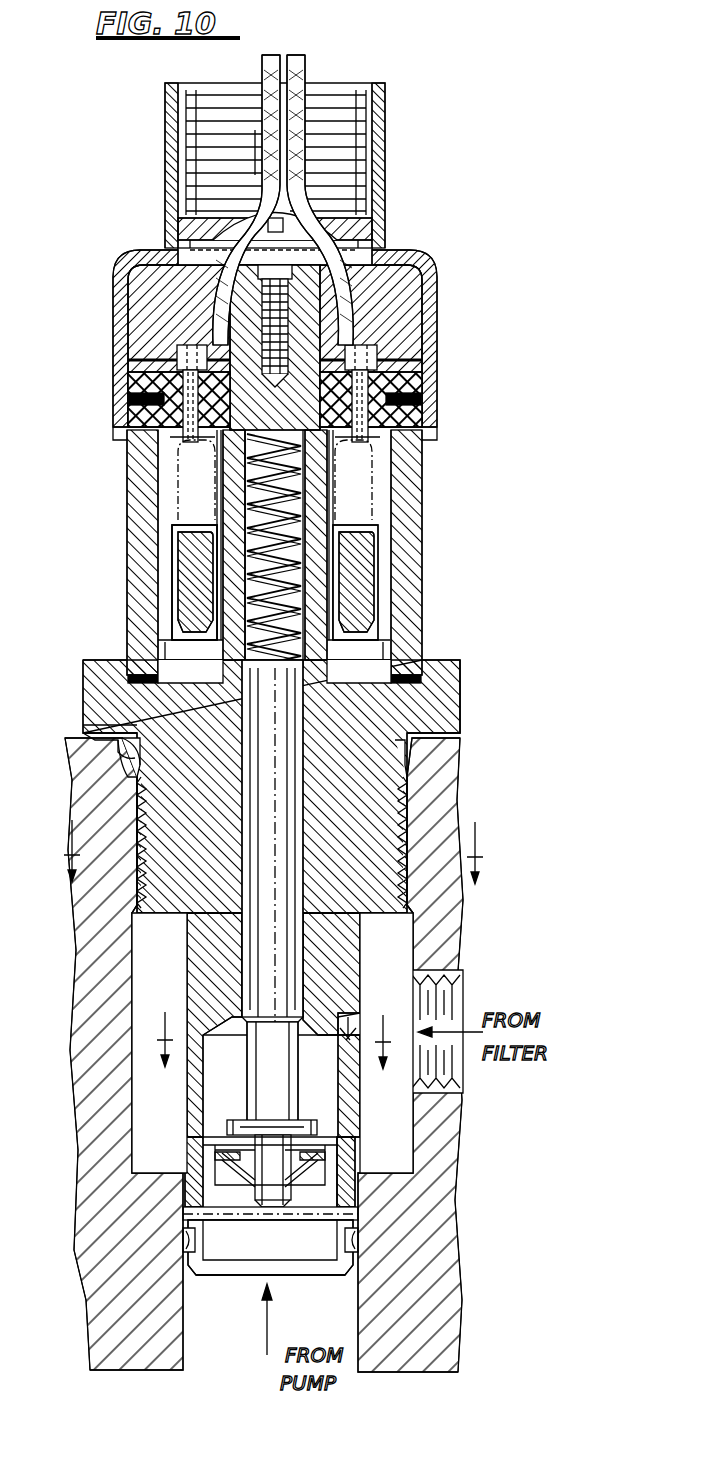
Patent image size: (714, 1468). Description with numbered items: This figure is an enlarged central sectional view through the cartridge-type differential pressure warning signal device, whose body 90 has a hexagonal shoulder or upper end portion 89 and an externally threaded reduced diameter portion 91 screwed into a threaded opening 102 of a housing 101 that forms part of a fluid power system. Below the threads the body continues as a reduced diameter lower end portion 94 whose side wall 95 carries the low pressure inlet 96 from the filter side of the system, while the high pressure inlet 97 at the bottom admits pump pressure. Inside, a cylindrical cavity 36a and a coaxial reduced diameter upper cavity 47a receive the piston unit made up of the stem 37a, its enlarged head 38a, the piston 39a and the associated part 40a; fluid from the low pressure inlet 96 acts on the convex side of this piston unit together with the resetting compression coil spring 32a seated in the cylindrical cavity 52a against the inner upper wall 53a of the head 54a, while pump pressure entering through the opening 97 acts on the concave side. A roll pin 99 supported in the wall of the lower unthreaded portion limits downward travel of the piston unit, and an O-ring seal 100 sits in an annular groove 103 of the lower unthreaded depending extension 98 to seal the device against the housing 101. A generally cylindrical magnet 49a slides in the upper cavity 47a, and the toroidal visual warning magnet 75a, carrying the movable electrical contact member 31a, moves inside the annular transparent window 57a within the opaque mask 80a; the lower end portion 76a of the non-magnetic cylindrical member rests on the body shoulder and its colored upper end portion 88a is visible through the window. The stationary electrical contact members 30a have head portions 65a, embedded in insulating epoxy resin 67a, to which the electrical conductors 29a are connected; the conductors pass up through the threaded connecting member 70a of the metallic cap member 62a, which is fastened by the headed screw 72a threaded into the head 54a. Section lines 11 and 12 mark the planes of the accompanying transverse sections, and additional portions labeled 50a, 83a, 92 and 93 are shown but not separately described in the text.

The electrical conductors 29a is at (298, 62).
The annular threaded connecting member 70a is at (383, 172).
The headed screw 72a is at (380, 242).
The electrically insulating epoxy resin material 67a is at (292, 300).
The head of housing body 54a is at (395, 300).
The annular metallic cap member 62a is at (118, 322).
The head portion of stationary contact member 65a is at (368, 358).
The stationary electrical contact members 30a is at (395, 386).
The inner upper wall of cylindrical cavity 53a is at (145, 400).
The toroidal visual warning signal magnet 75a is at (355, 480).
The annular transparent window 57a is at (410, 505).
The upper end portion of non-magnetic cylindrical member 88a is at (200, 495).
The coaxial cylindrical cavity 52a is at (220, 512).
The resetting compression coil spring 32a is at (292, 562).
The movable electrical contact member 31a is at (175, 548).
The lower end portion of stationary cylindrical member 76a is at (200, 612).
The flange 83a is at (412, 645).
The opaque housing or mask 80a is at (182, 645).
The hexagonal-shaped shoulder 89 is at (100, 726).
The shoulder 92 is at (117, 757).
The cylindrical magnet 49a is at (290, 738).
The threaded body 50a is at (307, 757).
The threads 93 is at (122, 824).
The externally threaded reduced diameter portion 91 is at (410, 798).
The section line 11 is at (275, 852).
The threaded opening 102 is at (80, 890).
The body of differential pressure warning signal device 90 is at (410, 888).
The reduced diameter lower end portion 94 is at (405, 942).
The reduced diameter upper cylindrical cavity 47a is at (243, 975).
The low pressure inlet 96 is at (356, 1030).
The section line 12 is at (275, 1040).
The head of stem 38a is at (230, 1128).
The stem 37a is at (262, 1075).
The cylindrical cavity 36a is at (336, 1100).
The housing 101 is at (455, 1162).
The piston unit 39a is at (205, 1170).
The side wall of lower end portion 95 is at (352, 1180).
The piston unit part 40a is at (245, 1182).
The lower unthreaded depending extension 98 is at (358, 1240).
The roll pin 99 is at (250, 1220).
The O-ring seal 100 is at (356, 1255).
The high pressure inlet 97 is at (232, 1265).
The annular groove 103 is at (270, 1298).